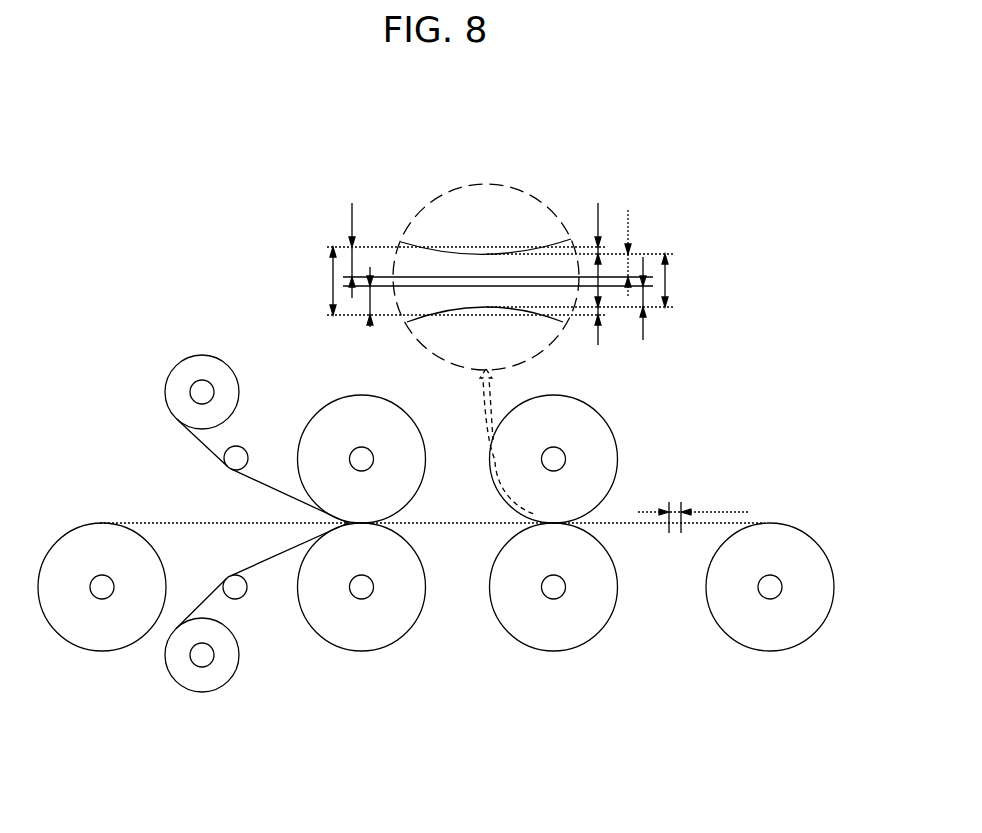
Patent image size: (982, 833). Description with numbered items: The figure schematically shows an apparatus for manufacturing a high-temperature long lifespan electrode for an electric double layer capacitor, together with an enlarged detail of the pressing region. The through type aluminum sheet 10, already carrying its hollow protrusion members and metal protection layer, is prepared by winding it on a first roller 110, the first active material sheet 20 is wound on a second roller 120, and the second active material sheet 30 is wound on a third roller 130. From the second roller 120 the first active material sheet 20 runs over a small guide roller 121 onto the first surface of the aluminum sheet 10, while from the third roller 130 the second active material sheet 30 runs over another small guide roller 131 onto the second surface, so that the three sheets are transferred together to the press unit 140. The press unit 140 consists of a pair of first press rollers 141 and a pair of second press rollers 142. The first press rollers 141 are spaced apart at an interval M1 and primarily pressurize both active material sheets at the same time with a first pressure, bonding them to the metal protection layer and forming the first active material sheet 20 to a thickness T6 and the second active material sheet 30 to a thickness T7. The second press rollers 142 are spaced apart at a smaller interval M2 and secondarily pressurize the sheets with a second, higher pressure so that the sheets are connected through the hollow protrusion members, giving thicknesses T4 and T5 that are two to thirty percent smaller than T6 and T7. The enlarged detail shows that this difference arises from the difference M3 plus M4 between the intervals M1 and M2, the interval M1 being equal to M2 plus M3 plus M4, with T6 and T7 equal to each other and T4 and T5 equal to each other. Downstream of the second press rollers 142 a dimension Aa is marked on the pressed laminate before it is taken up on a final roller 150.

The through type aluminum sheet 10 is at (172, 522).
The first active material sheet 20 is at (268, 487).
The second active material sheet 30 is at (265, 562).
The first roller 110 is at (80, 547).
The second roller 120 is at (200, 368).
The first guide roller 121 is at (238, 455).
The third roller 130 is at (205, 675).
The second guide roller 131 is at (237, 587).
The press unit 140 is at (458, 452).
The pair of first press rollers 141 is at (397, 482).
The pair of second press rollers 142 is at (555, 485).
The winding roll 150 is at (747, 623).
The gap dimension Aa is at (693, 512).
The interval between the pair of first press rollers M1 is at (318, 281).
The interval between the pair of second press rollers M2 is at (682, 280).
The interval difference M3 is at (600, 265).
The interval difference M4 is at (600, 338).
The thickness of the first active material sheet after secondary pressurization T4 is at (642, 253).
The thickness of the second active material sheet after secondary pressurization T5 is at (657, 305).
The thickness of the first active material sheet after primary pressurization T6 is at (366, 250).
The thickness of the second active material sheet after primary pressurization T7 is at (383, 312).